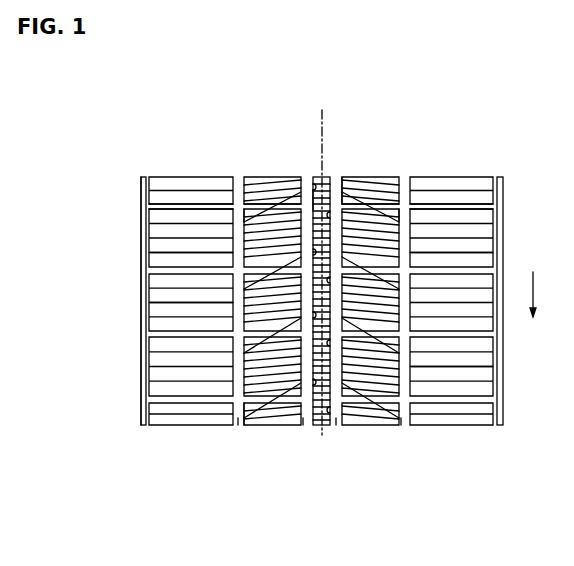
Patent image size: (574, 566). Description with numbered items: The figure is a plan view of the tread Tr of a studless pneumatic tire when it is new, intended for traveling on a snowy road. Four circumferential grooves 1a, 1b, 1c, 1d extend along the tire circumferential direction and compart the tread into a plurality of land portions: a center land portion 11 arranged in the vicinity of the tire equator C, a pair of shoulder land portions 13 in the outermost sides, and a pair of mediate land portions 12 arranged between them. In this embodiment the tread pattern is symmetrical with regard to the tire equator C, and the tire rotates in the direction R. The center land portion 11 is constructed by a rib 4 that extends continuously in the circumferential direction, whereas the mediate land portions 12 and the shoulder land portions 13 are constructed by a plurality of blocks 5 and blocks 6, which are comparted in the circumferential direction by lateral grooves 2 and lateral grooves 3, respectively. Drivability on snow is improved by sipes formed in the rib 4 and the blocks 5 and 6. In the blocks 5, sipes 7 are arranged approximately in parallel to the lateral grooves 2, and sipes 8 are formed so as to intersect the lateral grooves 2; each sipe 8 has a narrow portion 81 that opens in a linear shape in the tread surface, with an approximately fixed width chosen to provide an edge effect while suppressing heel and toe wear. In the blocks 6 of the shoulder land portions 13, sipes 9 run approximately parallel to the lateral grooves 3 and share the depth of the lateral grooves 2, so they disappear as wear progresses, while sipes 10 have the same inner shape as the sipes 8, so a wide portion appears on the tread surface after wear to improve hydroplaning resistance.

The circumferential groove 1a is at (238, 418).
The circumferential groove 1b is at (303, 418).
The circumferential groove 1c is at (336, 418).
The circumferential groove 1d is at (401, 418).
The lateral groove 2 is at (389, 208).
The lateral groove 3 is at (447, 205).
The rib 4 is at (315, 203).
The block 5 is at (397, 213).
The block 6 is at (475, 217).
The sipe 7 is at (255, 415).
The sipe 8 is at (272, 200).
The narrow portion 81 is at (368, 200).
The sipe 9 is at (475, 250).
The sipe 10 is at (478, 362).
The center land portion 11 is at (313, 433).
The mediate land portion 12 is at (399, 433).
The shoulder land portion 13 is at (493, 433).
The tire equator C is at (321, 262).
The rotation direction R is at (532, 282).
The tread Tr is at (127, 378).